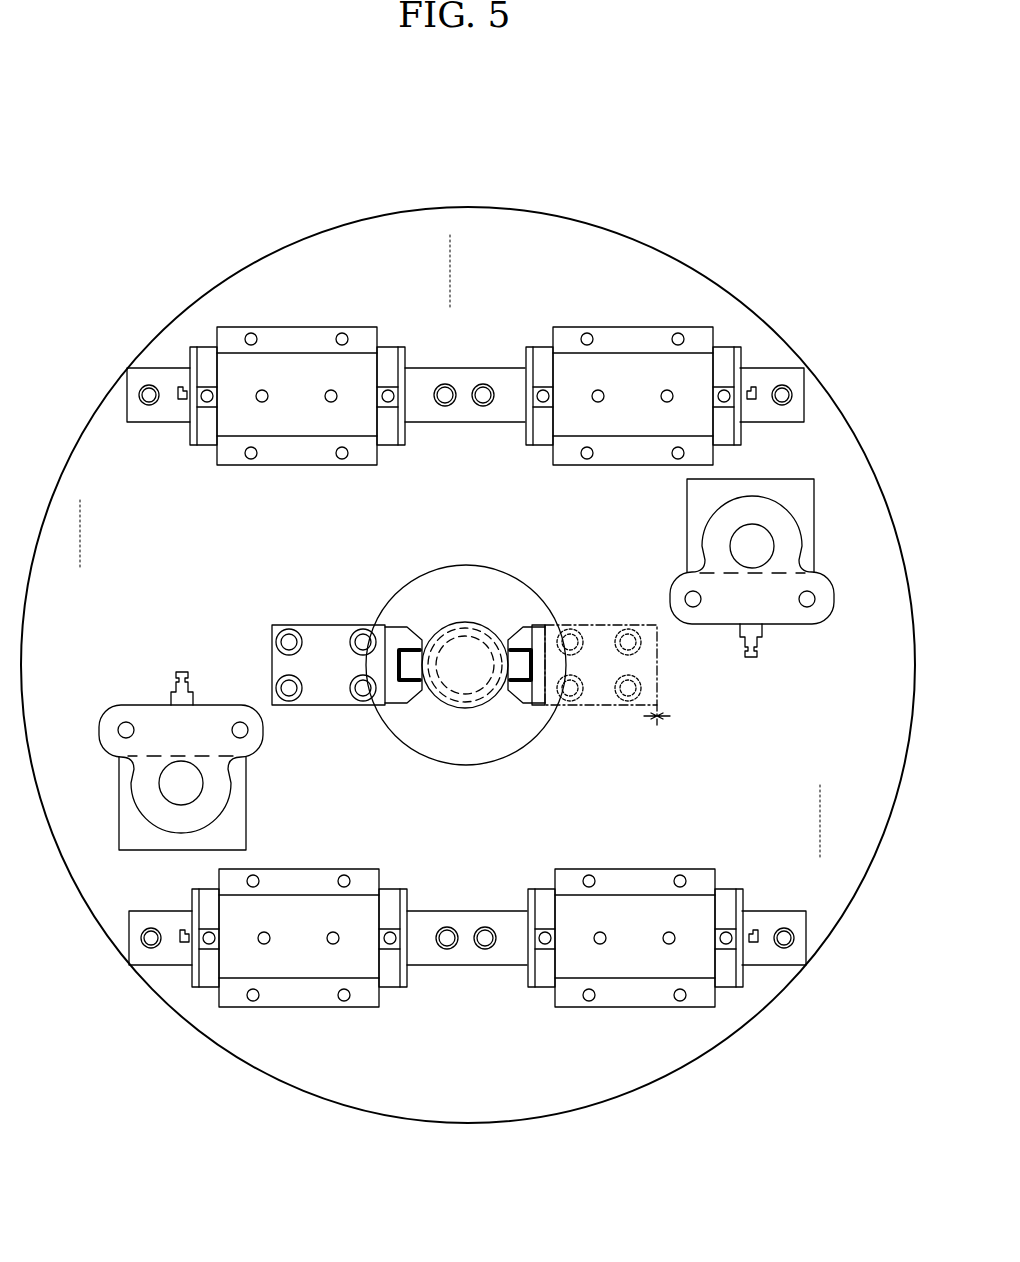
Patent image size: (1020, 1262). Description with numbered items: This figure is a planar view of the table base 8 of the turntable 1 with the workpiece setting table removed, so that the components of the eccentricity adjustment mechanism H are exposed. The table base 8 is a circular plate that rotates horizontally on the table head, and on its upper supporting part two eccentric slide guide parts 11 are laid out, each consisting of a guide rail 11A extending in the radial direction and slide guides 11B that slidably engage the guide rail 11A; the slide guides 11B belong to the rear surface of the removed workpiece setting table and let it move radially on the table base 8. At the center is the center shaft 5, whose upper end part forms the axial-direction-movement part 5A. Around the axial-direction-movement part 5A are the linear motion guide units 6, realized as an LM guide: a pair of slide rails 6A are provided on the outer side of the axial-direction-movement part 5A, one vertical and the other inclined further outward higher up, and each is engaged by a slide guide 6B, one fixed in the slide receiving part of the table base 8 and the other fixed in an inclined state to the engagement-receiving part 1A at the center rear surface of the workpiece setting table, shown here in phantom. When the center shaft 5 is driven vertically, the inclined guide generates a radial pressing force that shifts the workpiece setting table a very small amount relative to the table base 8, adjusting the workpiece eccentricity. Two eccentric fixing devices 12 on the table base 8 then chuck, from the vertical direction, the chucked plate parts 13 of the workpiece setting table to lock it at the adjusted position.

The turntable 1 is at (786, 218).
The engagement-receiving part 1A is at (548, 690).
The center shaft 5 is at (464, 601).
The axial-direction-movement part 5A is at (478, 640).
The linear motion guide unit 6 is at (487, 691).
The slide rail 6A is at (418, 655).
The slide guide 6B is at (395, 698).
The table base 8 is at (614, 265).
The eccentric slide guide part 11 is at (495, 667).
The guide rail 11A is at (782, 380).
The slide guide 11B is at (325, 370).
The eccentric fixing device 12 is at (819, 500).
The chucked plate part 13 is at (705, 510).
The eccentricity adjustment mechanism H is at (135, 223).